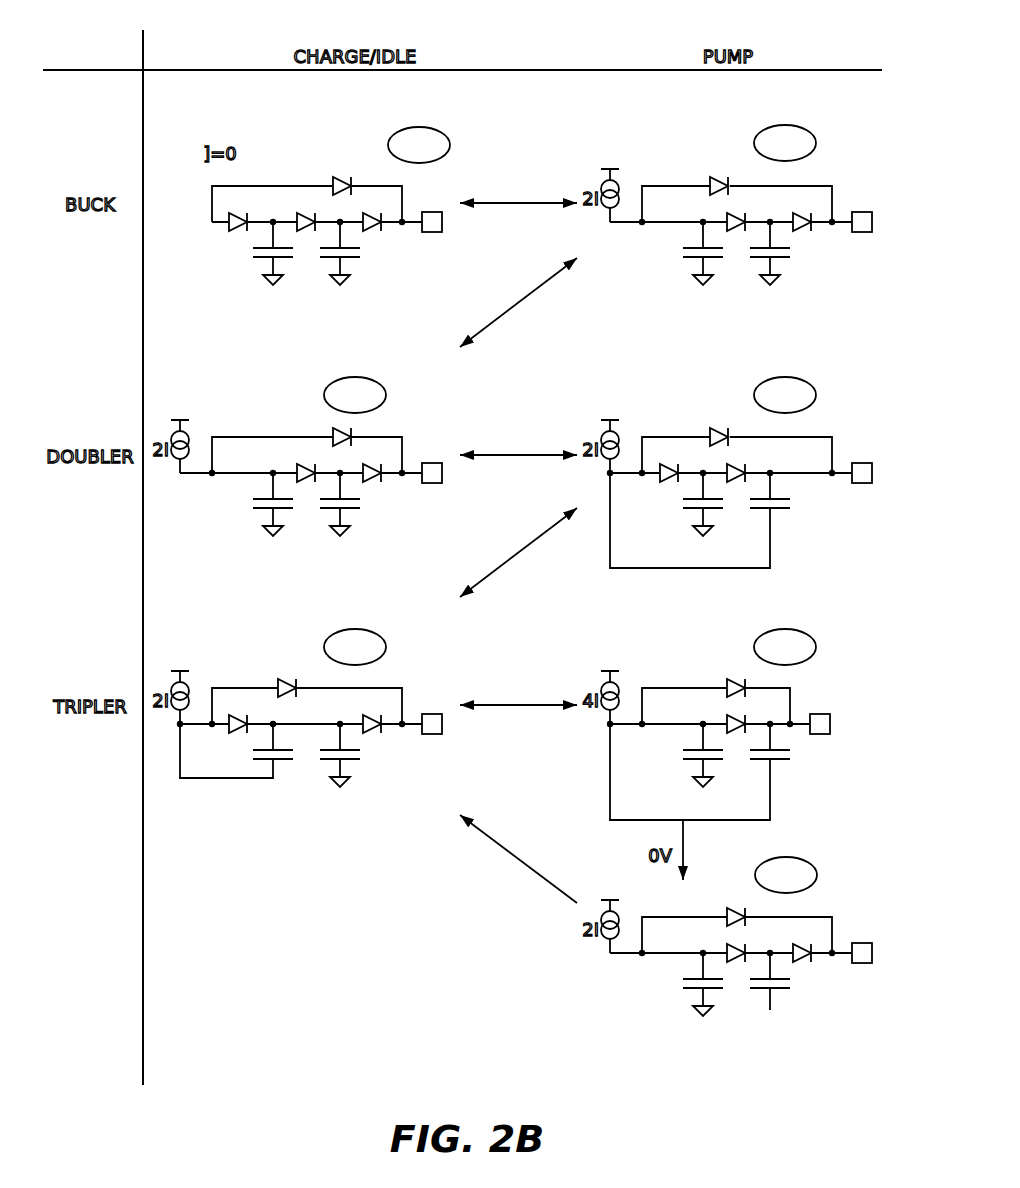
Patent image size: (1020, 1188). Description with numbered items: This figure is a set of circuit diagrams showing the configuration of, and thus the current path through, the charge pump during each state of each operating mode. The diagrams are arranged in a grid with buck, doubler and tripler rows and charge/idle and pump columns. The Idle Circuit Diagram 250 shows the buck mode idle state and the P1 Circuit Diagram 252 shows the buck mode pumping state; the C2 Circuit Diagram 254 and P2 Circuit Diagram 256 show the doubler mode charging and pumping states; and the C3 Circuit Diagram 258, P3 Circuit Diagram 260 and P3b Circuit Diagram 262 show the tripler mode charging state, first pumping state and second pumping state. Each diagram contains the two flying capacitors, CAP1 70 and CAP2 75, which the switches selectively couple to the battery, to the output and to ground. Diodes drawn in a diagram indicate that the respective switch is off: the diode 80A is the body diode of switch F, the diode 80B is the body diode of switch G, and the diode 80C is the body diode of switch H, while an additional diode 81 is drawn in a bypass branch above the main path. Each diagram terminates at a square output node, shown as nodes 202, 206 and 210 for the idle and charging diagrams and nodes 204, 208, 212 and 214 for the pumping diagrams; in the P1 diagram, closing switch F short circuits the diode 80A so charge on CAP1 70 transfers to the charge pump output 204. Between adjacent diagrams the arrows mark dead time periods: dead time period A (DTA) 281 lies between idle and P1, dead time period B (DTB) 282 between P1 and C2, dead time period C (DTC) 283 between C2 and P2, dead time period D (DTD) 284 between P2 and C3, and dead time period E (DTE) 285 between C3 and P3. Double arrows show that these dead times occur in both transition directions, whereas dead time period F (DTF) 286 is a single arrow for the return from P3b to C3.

The flying capacitor CAP1 70 is at (288, 257).
The flying capacitor CAP2 75 is at (355, 257).
The diode 80A is at (231, 226).
The diode 80B is at (298, 216).
The diode 80C is at (379, 231).
The bypass diode 81 is at (334, 180).
The output node of idle state 202 is at (432, 211).
The charge pump output 204 is at (862, 211).
The output node of charge state C2 206 is at (432, 462).
The output node of pump state P2 208 is at (862, 462).
The output node of charge state C3 210 is at (432, 713).
The output node of pump state P3 212 is at (820, 713).
The output node of pump state P3b 214 is at (862, 942).
The Idle Circuit Diagram 250 is at (460, 122).
The P1 Circuit Diagram 252 is at (808, 110).
The C2 Circuit Diagram 254 is at (437, 378).
The P2 Circuit Diagram 256 is at (808, 362).
The C3 Circuit Diagram 258 is at (437, 629).
The P3 Circuit Diagram 260 is at (808, 613).
The P3b Circuit Diagram 262 is at (808, 843).
The dead time period A (DTA) 281 is at (510, 201).
The dead time period B (DTB) 282 is at (483, 308).
The dead time period C (DTC) 283 is at (510, 452).
The dead time period D (DTD) 284 is at (485, 554).
The dead time period E (DTE) 285 is at (503, 703).
The dead time period F (DTF) 286 is at (518, 858).